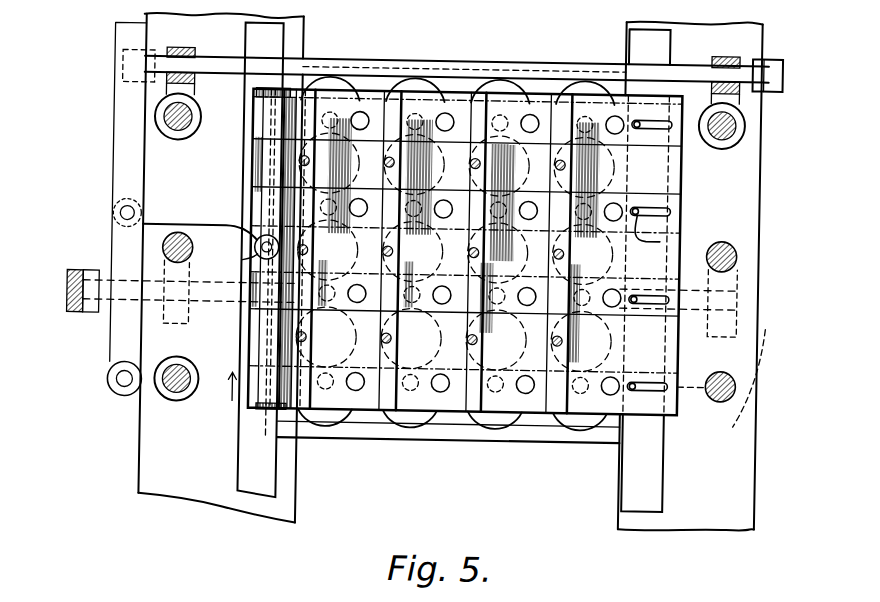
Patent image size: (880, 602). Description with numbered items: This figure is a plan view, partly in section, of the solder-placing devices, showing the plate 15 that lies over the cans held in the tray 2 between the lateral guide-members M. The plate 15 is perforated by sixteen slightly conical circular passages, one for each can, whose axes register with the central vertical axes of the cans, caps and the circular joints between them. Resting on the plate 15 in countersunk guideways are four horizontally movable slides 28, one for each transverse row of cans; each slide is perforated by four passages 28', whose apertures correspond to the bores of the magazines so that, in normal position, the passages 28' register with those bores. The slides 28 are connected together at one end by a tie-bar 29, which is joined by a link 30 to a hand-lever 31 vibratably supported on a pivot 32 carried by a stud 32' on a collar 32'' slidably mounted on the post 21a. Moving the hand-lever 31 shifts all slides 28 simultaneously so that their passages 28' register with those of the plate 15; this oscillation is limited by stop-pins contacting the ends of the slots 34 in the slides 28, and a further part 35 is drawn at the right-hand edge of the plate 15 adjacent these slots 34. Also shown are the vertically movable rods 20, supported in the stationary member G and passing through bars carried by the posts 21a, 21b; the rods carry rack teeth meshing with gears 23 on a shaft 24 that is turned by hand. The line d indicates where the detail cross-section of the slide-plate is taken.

The tray 2 is at (455, 431).
The plate 15 is at (482, 91).
The vertically movable rods 20 is at (162, 253).
The post 21a is at (170, 397).
The post 21b is at (153, 128).
The gears 23 is at (150, 336).
The shaft 24 is at (213, 305).
The slides 28 is at (454, 263).
The passages 28' is at (460, 285).
The tie-bar 29 is at (255, 405).
The link 30 is at (213, 217).
The hand-lever 31 is at (120, 329).
The pivot 32 is at (89, 404).
The stud 32' is at (90, 420).
The collar 32'' is at (161, 423).
The slots 34 is at (650, 118).
The hook 35 is at (659, 239).
The section line d- d is at (457, 383).
The lateral guide-members M is at (253, 448).
The stationary member G is at (200, 495).